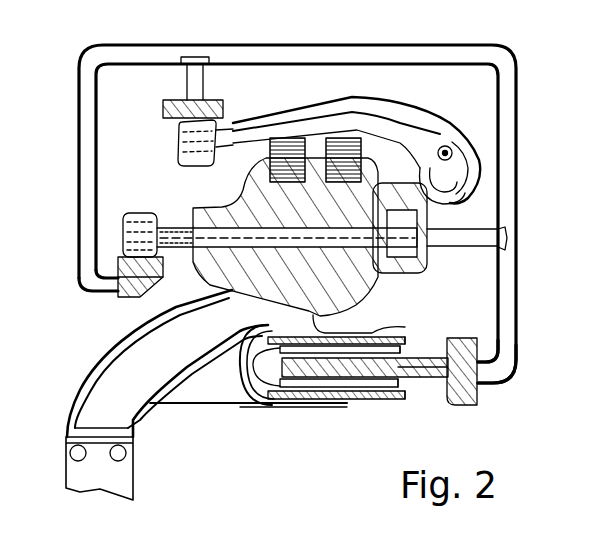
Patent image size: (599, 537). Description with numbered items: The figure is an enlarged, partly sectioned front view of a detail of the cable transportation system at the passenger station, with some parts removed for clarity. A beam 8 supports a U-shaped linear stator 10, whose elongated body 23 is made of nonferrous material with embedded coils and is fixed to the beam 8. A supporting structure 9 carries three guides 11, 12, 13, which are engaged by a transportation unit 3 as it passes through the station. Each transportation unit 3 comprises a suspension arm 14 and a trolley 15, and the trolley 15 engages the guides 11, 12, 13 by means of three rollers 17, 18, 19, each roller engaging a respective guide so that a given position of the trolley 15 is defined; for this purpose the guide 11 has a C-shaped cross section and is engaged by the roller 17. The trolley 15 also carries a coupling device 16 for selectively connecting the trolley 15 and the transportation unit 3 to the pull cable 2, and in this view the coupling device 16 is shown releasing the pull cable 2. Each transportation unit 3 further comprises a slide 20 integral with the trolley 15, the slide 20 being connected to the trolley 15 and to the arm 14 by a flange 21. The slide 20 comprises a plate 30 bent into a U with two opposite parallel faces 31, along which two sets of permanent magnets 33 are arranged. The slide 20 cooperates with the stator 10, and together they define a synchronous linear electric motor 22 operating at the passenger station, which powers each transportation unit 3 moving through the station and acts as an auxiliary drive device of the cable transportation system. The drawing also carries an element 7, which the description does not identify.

The pull cable 2 is at (437, 200).
The transportation unit 3 is at (175, 466).
The frame arm 7 is at (521, 386).
The beam 8 is at (471, 410).
The supporting structure 9 is at (518, 247).
The linear stator 10 is at (345, 369).
The guide 11 is at (323, 359).
The guide 12 is at (223, 100).
The guide 13 is at (97, 281).
The suspension arm 14 is at (100, 467).
The trolley 15 is at (165, 192).
The coupling device 16 is at (474, 131).
The roller 17 is at (392, 272).
The roller 18 is at (180, 134).
The roller 19 is at (122, 233).
The slide 20 is at (380, 411).
The flange 21 is at (190, 387).
The synchronous linear electric motor 22 is at (294, 437).
The elongated body 23 is at (413, 390).
The plate 30 is at (250, 410).
The faces 31 is at (262, 346).
The permanent magnets 33 is at (420, 339).